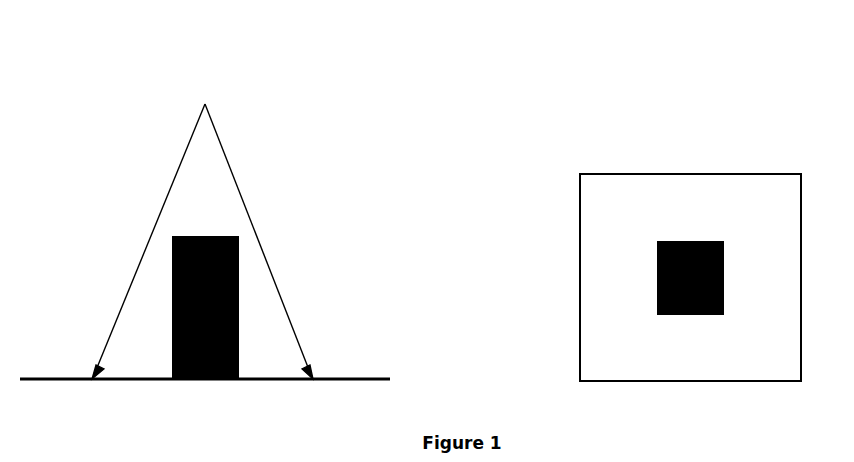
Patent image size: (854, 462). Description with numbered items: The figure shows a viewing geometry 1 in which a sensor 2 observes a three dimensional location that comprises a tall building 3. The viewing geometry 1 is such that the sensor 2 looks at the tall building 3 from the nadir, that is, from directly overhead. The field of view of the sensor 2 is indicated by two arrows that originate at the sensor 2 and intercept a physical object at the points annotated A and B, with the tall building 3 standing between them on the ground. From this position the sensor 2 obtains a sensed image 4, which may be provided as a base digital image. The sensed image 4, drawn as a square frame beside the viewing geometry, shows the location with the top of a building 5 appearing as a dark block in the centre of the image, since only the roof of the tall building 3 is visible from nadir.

The viewing geometry 1 is at (121, 112).
The sensor 2 is at (205, 104).
The tall building 3 is at (239, 266).
The sensed image 4 is at (622, 111).
The top of a building 5 is at (657, 268).